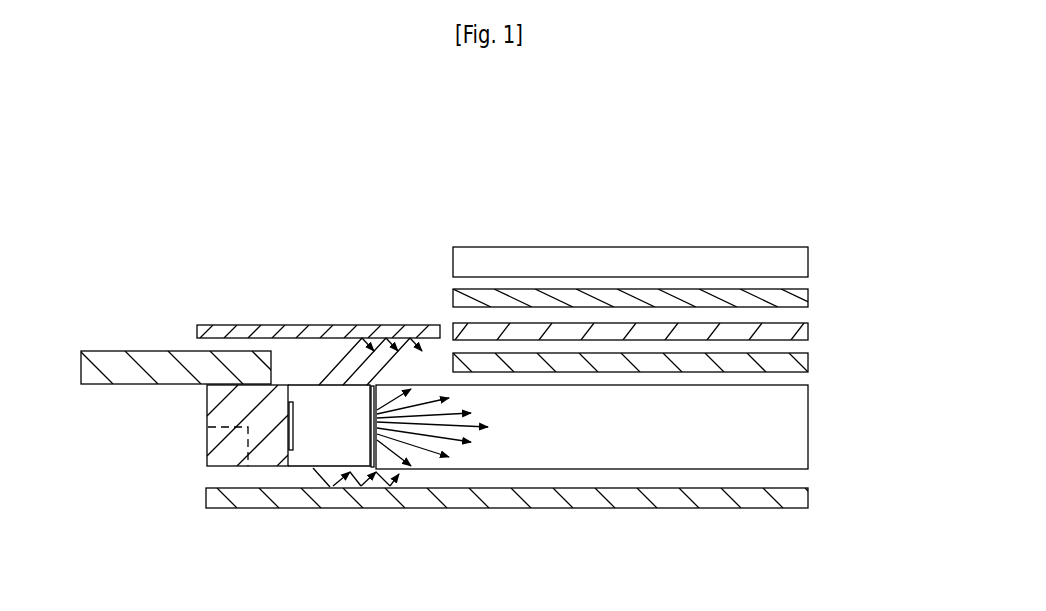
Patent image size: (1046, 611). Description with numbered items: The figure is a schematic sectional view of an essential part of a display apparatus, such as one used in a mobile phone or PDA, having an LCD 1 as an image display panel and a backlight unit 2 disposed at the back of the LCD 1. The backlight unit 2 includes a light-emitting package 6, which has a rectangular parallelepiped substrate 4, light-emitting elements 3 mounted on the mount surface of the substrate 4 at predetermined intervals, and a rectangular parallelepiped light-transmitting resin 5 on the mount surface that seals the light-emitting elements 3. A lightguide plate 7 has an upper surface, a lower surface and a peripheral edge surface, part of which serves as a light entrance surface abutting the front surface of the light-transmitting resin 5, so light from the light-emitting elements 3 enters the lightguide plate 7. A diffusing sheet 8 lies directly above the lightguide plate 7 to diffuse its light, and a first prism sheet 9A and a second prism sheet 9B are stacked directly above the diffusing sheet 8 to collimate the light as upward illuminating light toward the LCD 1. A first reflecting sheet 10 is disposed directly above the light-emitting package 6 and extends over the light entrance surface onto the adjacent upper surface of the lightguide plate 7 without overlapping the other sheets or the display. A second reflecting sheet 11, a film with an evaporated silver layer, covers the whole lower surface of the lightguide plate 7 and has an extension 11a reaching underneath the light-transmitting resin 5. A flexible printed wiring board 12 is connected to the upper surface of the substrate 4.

The LCD 1 is at (663, 247).
The backlight unit 2 is at (872, 285).
The light-emitting elements 3 is at (294, 430).
The substrate 4 is at (207, 415).
The light-transmitting resin 5 is at (374, 462).
The light-emitting package 6 is at (205, 446).
The lightguide plate 7 is at (738, 470).
The diffusing sheet 8 is at (778, 377).
The first prism sheet 9A is at (776, 341).
The second prism sheet 9B is at (776, 308).
The first reflecting sheet 10 is at (317, 325).
The second reflecting sheet 11 is at (633, 509).
The extension 11a is at (206, 515).
The flexible printed wiring board 12 is at (147, 351).